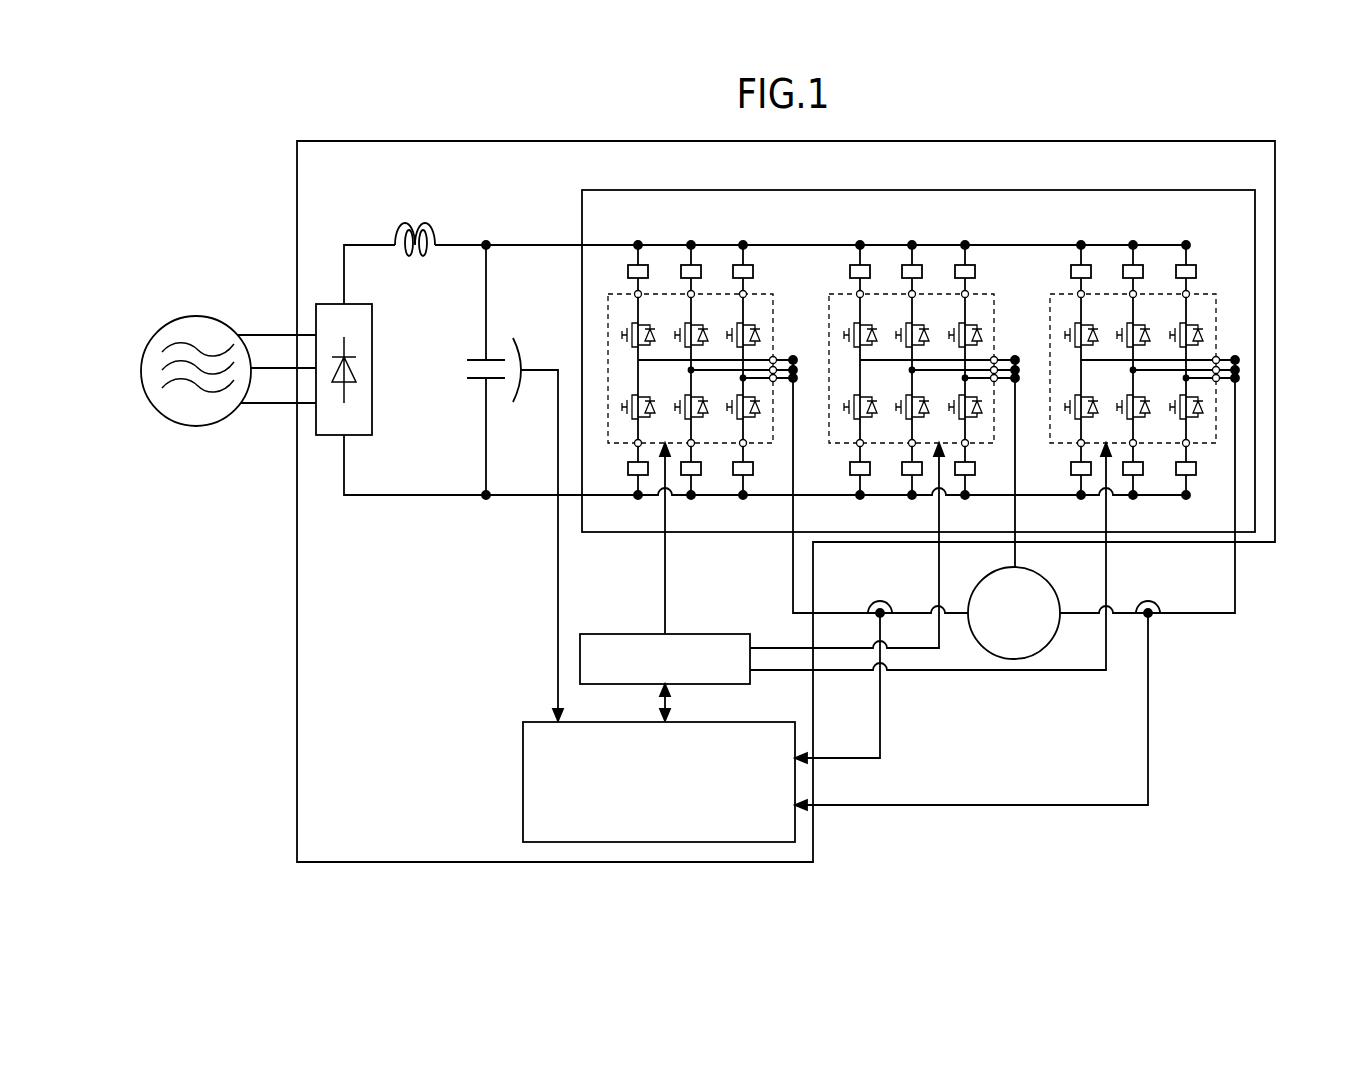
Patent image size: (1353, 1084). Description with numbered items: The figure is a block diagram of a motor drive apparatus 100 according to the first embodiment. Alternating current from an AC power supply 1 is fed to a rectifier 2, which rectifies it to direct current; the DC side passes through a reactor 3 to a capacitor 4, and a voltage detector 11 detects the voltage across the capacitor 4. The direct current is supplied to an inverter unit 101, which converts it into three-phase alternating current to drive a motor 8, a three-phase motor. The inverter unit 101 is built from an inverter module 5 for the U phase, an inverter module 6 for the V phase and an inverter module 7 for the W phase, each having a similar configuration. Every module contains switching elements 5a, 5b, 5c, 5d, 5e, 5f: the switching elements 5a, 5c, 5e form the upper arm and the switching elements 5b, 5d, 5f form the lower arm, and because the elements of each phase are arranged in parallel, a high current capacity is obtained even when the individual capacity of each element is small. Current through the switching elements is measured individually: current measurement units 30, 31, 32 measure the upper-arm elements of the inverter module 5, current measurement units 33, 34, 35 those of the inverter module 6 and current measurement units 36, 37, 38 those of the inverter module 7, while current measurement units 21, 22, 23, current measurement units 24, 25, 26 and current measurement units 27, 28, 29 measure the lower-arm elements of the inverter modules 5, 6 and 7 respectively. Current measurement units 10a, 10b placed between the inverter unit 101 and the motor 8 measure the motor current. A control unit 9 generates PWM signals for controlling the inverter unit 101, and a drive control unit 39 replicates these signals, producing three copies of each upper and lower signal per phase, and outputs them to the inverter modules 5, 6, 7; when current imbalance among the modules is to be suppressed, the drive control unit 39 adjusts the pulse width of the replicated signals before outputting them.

The motor drive apparatus 100 is at (497, 143).
The inverter unit 101 is at (1195, 191).
The AC power supply 1 is at (189, 317).
The rectifier 2 is at (373, 369).
The reactor 3 is at (412, 222).
The capacitor 4 is at (475, 357).
The voltage detector 11 is at (516, 337).
The inverter module 5 is at (699, 301).
The switching element 5a is at (622, 335).
The switching element 5b is at (622, 407).
The switching element 5c is at (675, 335).
The switching element 5d is at (675, 407).
The switching element 5e is at (727, 335).
The switching element 5f is at (727, 407).
The inverter module 6 is at (994, 294).
The inverter module 7 is at (1215, 294).
The motor 8 is at (1014, 659).
The control unit 9 is at (732, 720).
The drive control unit 39 is at (700, 632).
The current measurement unit 10a is at (880, 600).
The current measurement unit 10b is at (1148, 600).
The current measurement unit 21 is at (634, 478).
The current measurement unit 22 is at (696, 478).
The current measurement unit 23 is at (747, 478).
The current measurement unit 24 is at (856, 478).
The current measurement unit 25 is at (909, 478).
The current measurement unit 26 is at (969, 478).
The current measurement unit 27 is at (1078, 478).
The current measurement unit 28 is at (1137, 478).
The current measurement unit 29 is at (1190, 478).
The current measurement unit 30 is at (640, 262).
The current measurement unit 31 is at (693, 262).
The current measurement unit 32 is at (746, 262).
The current measurement unit 33 is at (860, 262).
The current measurement unit 34 is at (912, 262).
The current measurement unit 35 is at (965, 262).
The current measurement unit 36 is at (1081, 262).
The current measurement unit 37 is at (1133, 262).
The current measurement unit 38 is at (1186, 262).